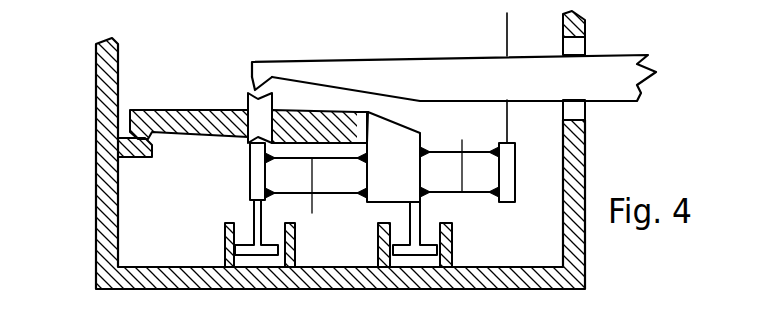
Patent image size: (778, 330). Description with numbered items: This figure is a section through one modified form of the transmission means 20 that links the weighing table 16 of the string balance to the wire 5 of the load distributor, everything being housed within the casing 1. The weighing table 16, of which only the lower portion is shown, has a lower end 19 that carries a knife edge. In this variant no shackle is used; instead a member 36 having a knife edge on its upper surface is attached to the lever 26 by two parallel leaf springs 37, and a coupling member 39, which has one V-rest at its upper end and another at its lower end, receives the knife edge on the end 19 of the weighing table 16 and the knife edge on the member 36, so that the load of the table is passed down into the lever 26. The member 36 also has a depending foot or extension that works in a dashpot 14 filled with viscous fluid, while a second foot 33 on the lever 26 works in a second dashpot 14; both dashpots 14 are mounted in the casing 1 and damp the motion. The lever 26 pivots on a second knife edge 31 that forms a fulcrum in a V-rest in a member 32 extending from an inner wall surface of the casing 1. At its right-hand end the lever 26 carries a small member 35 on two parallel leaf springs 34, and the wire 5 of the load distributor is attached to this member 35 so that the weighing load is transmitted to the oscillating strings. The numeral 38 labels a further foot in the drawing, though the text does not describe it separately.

The casing 1 is at (96, 238).
The wire 5 is at (507, 40).
The dashpot 14 is at (261, 262).
The weighing table 16 is at (366, 78).
The lower end of the weighing table 19 is at (262, 80).
The transmission means 20 is at (221, 145).
The lever 26 is at (390, 178).
The second knife edge 31 is at (137, 110).
The member with V-rest 32 is at (140, 158).
The foot on the lever 33 is at (412, 216).
The parallel leaf springs 34 is at (445, 152).
The small member 35 is at (507, 171).
The member with knife edge 36 is at (250, 168).
The parallel leaf springs 37 is at (343, 194).
The foot 38 is at (235, 238).
The coupling member 39 is at (257, 110).